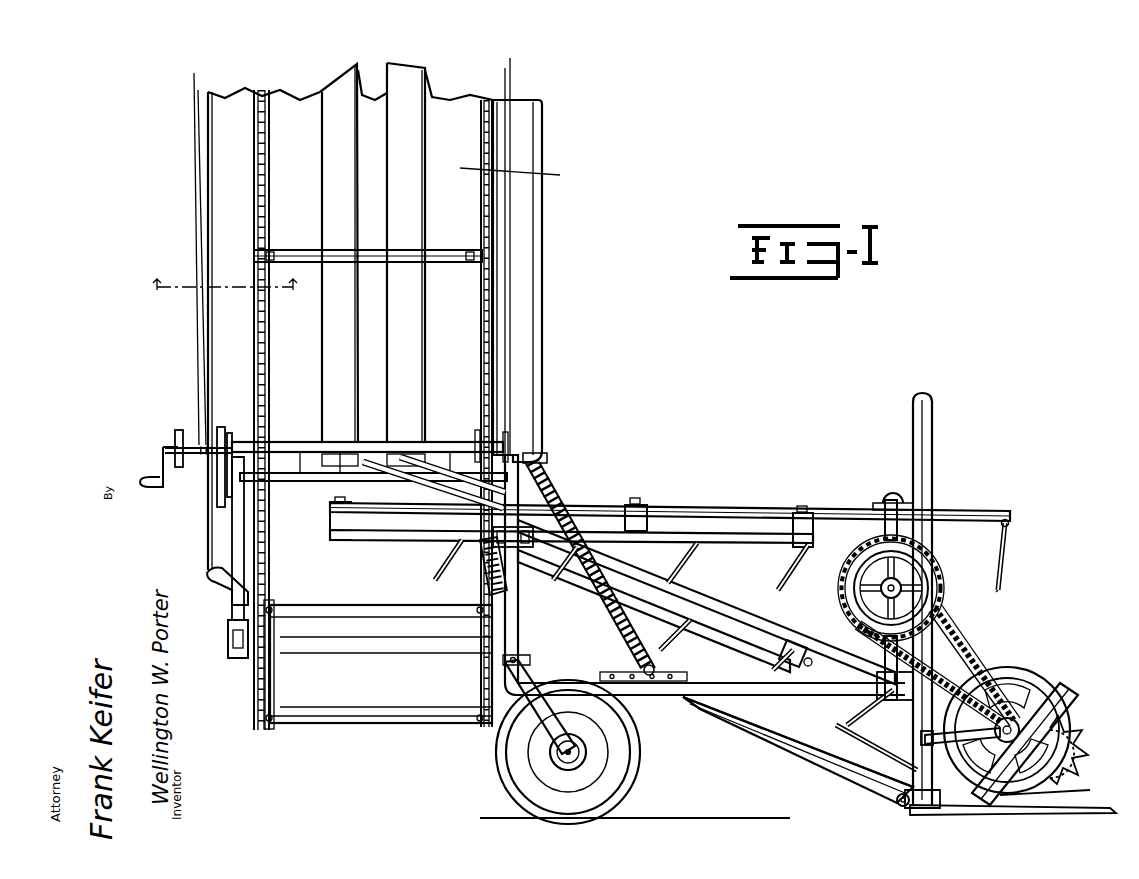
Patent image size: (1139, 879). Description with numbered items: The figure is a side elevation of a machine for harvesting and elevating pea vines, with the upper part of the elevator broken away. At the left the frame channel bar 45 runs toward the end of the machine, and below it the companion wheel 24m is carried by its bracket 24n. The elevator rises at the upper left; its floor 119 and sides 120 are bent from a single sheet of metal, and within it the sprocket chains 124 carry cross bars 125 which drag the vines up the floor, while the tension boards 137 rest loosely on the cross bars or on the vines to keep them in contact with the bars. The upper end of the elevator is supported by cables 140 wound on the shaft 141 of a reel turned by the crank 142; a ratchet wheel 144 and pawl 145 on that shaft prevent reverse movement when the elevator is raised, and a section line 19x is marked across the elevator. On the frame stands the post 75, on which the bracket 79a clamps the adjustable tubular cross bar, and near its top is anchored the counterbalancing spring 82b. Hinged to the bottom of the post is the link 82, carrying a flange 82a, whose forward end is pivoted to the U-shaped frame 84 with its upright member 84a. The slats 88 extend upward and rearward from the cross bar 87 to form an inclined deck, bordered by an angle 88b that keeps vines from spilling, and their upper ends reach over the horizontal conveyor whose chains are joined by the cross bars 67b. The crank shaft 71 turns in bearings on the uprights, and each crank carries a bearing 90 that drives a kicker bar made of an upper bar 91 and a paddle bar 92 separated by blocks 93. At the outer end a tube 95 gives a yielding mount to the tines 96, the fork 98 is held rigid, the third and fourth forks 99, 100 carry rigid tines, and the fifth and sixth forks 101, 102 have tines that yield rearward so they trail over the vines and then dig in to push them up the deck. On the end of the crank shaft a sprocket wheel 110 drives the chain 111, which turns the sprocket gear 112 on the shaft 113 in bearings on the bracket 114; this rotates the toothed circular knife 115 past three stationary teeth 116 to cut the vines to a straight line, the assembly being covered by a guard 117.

The section line 19x is at (216, 294).
The companion wheel 24m is at (523, 772).
The bracket 24n is at (540, 718).
The channel bar 45 is at (240, 657).
The cross bars 67b is at (292, 607).
The crank shaft 71 is at (884, 524).
The post 75 is at (512, 577).
The bracket 79a is at (530, 522).
The bar 82 is at (714, 701).
The flange 82a is at (668, 683).
The counter balancing spring 82b is at (562, 492).
The U-shaped frame 84 is at (933, 418).
The upright member 84a is at (925, 457).
The cross bar 87 is at (895, 802).
The slats 88 is at (823, 761).
The angle 88b is at (787, 724).
The bearing 90 is at (896, 492).
The upper bar 91 is at (694, 509).
The paddle bar 92 is at (748, 543).
The blocks 93 is at (330, 521).
The tube 95 is at (1010, 523).
The tines 96 is at (1003, 562).
The fork 98 is at (866, 573).
The third fork 99 is at (763, 668).
The fourth fork 100 is at (672, 572).
The fifth fork 101 is at (556, 577).
The sixth fork 102 is at (437, 556).
The sprocket wheel 110 is at (924, 570).
The chain 111 is at (972, 628).
The sprocket gear 112 is at (1022, 715).
The shaft 113 is at (1022, 722).
The bracket 114 is at (972, 744).
The circular knife 115 is at (1068, 737).
The stationary teeth 116 is at (1040, 780).
The guard 117 is at (1068, 694).
The floor 119 is at (527, 177).
The sides 120 is at (222, 134).
The sprocket chains 124 is at (267, 202).
The cross bars 125 is at (444, 250).
The tension boards 137 is at (345, 152).
The cables 140 is at (513, 76).
The shaft 141 is at (285, 441).
The crank 142 is at (160, 457).
The ratchet wheel 144 is at (220, 437).
The pawl 145 is at (220, 485).